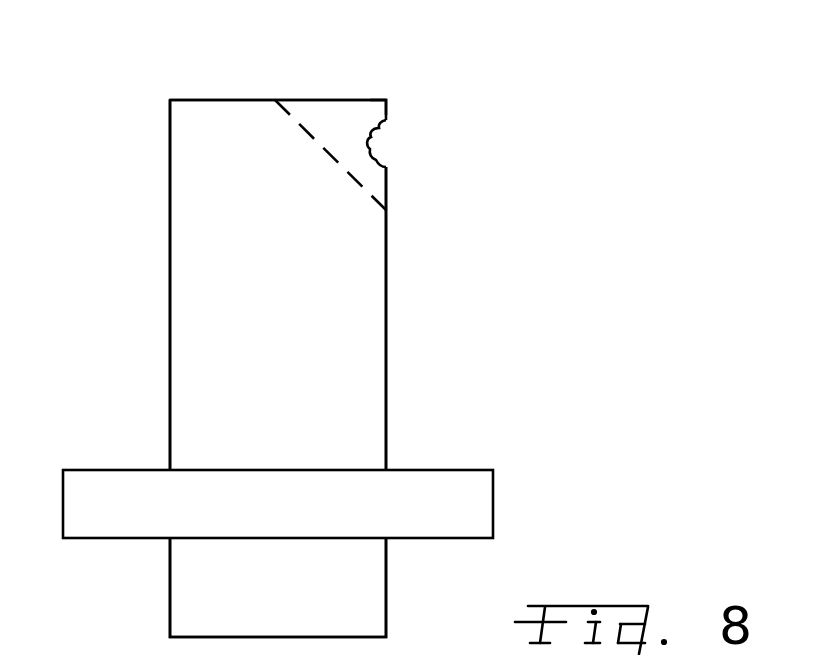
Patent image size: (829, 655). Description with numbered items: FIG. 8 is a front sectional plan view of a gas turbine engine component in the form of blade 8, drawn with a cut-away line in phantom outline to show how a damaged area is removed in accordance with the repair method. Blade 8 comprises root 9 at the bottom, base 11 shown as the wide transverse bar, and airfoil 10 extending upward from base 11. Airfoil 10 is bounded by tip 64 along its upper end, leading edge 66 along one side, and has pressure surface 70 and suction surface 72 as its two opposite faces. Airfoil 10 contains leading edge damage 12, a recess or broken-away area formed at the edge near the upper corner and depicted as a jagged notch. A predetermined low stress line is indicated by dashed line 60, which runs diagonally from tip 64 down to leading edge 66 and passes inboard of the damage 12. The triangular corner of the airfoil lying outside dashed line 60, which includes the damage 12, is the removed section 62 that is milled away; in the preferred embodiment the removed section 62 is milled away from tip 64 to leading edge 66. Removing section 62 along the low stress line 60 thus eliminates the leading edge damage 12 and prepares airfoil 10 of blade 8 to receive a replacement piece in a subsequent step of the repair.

The airfoil 10 is at (146, 100).
The tip 64 is at (235, 100).
The dashed line 60 is at (292, 118).
The removed section 62 is at (402, 89).
The leading edge damage site 12 is at (392, 144).
The suction surface 72 is at (158, 266).
The pressure surface 70 is at (252, 340).
The leading edge 66 is at (386, 263).
The base 11 is at (493, 495).
The blade 8 is at (536, 522).
The root 9 is at (386, 590).